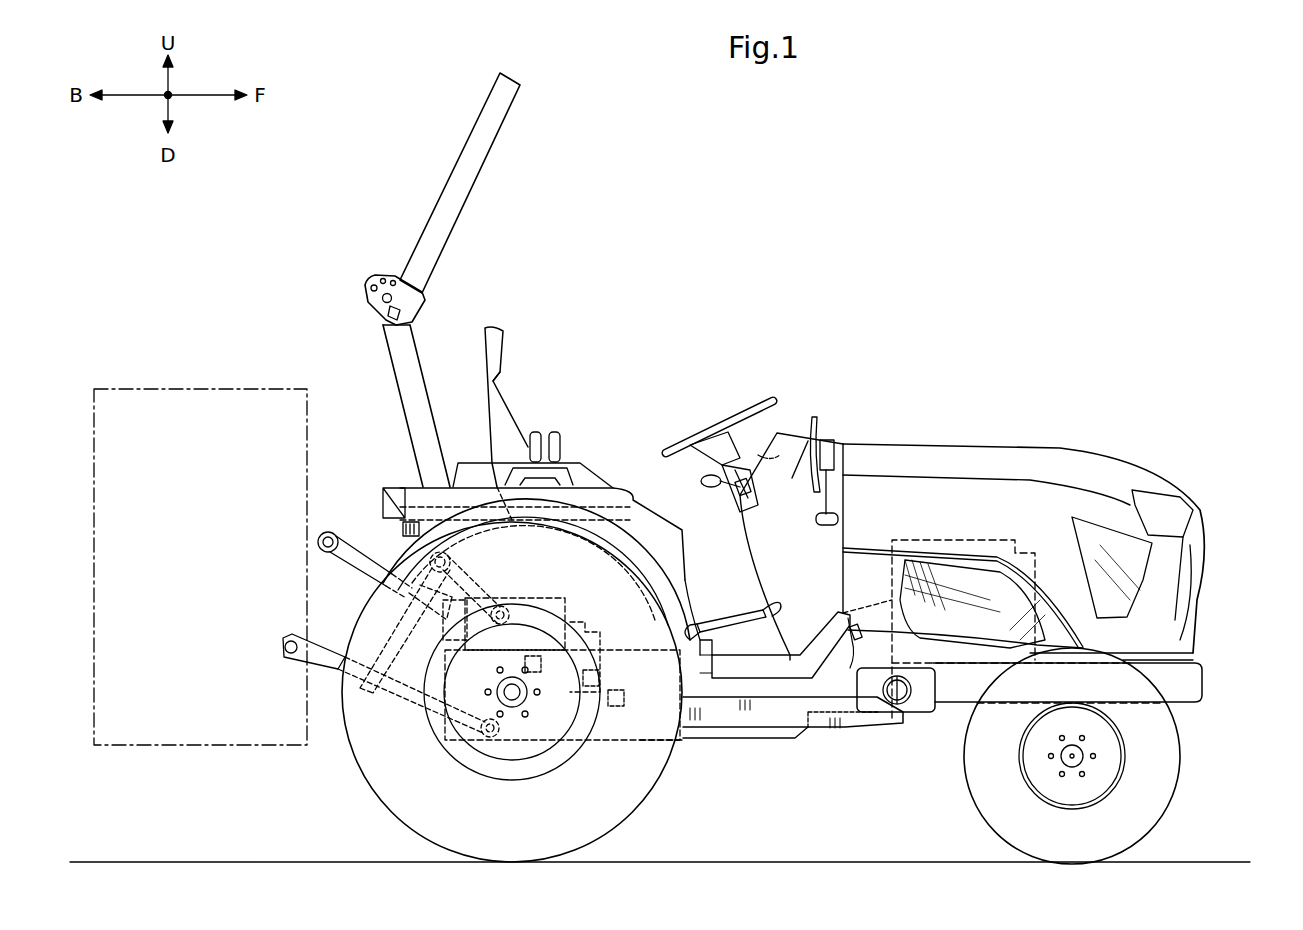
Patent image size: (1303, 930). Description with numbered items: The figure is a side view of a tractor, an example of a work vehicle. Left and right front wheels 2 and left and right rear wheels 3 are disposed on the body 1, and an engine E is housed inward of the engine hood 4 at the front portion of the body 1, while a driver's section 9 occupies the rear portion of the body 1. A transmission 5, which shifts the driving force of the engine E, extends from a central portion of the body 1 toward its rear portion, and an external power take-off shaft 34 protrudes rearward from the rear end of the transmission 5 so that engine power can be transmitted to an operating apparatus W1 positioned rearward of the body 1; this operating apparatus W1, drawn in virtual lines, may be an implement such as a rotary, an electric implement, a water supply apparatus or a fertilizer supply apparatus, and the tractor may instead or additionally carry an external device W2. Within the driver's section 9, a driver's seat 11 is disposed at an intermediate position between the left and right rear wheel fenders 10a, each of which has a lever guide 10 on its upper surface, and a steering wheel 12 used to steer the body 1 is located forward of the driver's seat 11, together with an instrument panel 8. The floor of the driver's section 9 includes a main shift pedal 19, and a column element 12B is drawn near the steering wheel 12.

The body 1 is at (813, 778).
The front wheels 2 is at (1153, 806).
The rear wheels 3 is at (410, 812).
The engine hood 4 is at (1100, 472).
The transmission 5 is at (718, 737).
The instrument panel 8 is at (770, 445).
The driver's section 9 is at (617, 355).
The lever guide 10 is at (475, 473).
The rear wheel fender 10a is at (693, 594).
The driver's seat 11 is at (490, 335).
The steering wheel 12 is at (745, 415).
The steering column lever 12B is at (732, 492).
The main shift pedal 19 is at (750, 625).
The external power take-off shaft 34 is at (415, 702).
The engine E is at (1005, 540).
The operating apparatus W1 is at (213, 389).
The external device W2 is at (200, 567).